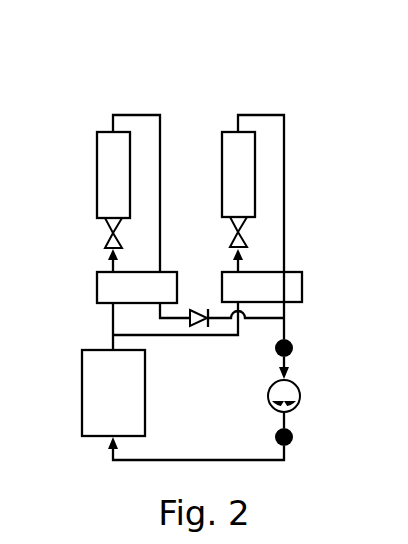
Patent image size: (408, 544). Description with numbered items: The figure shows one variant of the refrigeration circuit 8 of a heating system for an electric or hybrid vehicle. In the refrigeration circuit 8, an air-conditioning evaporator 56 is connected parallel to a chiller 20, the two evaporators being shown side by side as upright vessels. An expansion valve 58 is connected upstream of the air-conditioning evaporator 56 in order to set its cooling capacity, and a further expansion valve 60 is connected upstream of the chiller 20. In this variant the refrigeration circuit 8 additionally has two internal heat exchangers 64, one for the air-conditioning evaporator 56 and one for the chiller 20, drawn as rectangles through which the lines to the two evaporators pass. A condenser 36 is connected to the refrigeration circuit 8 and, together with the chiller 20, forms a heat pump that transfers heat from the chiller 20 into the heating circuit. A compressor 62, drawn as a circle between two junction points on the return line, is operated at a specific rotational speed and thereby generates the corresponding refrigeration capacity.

The refrigeration circuit 8 is at (165, 81).
The chiller 20 is at (255, 179).
The condenser 36 is at (113, 399).
The air-conditioning evaporator 56 is at (97, 188).
The expansion valve 58 is at (112, 242).
The expansion valve 60 is at (243, 242).
The compressor 62 is at (302, 394).
The internal heat exchanger 64 is at (97, 285).